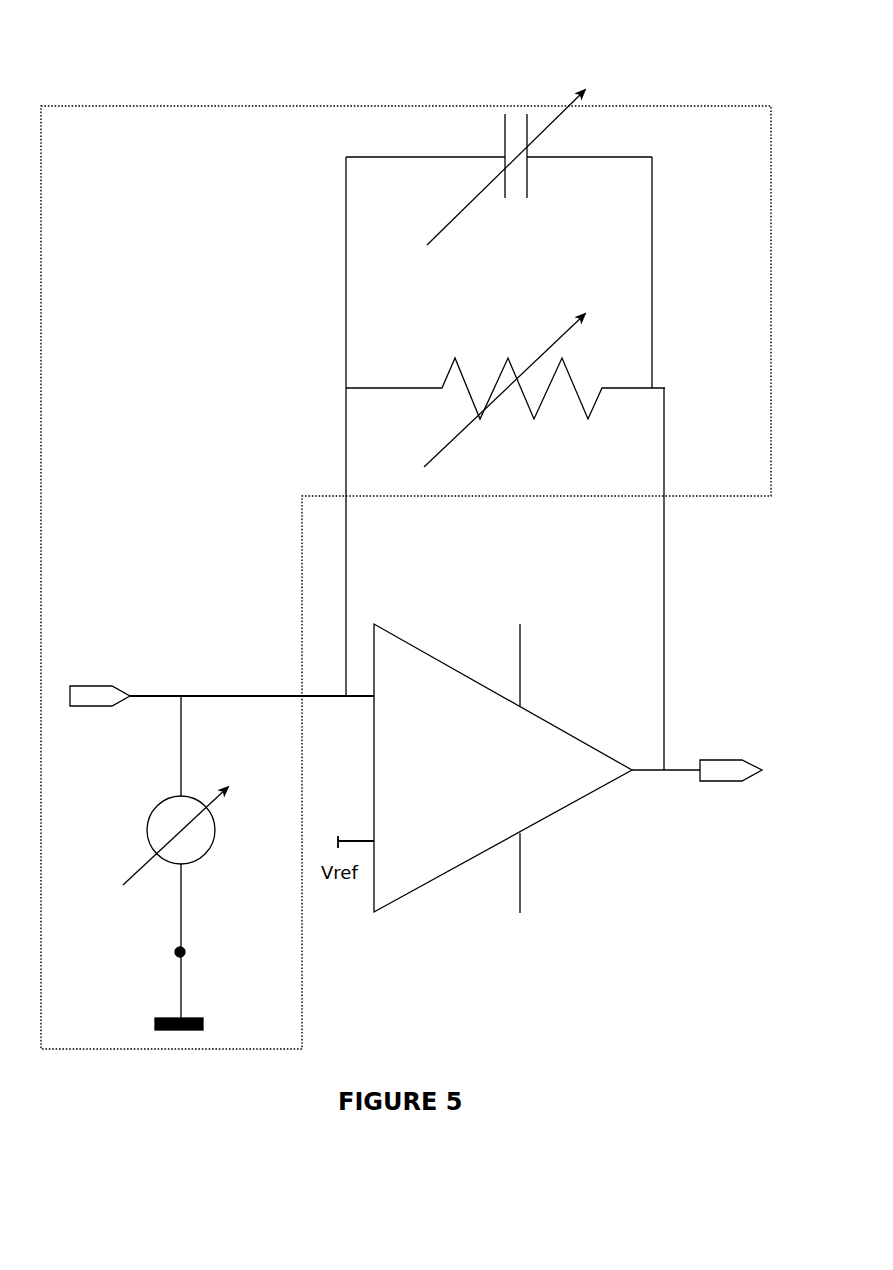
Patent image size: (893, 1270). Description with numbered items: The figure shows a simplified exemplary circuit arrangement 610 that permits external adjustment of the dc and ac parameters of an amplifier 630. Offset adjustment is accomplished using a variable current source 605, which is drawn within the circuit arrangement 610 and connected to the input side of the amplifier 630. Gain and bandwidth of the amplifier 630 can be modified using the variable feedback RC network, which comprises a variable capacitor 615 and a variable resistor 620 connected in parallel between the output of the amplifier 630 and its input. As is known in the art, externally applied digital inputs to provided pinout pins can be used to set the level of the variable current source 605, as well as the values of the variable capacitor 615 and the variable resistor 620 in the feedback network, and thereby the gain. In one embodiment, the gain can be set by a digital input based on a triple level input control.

The variable current source 605 is at (168, 863).
The circuit arrangement 610 is at (95, 1049).
The variable capacitor 615 is at (503, 138).
The variable resistor 620 is at (498, 377).
The amplifier 630 is at (587, 760).